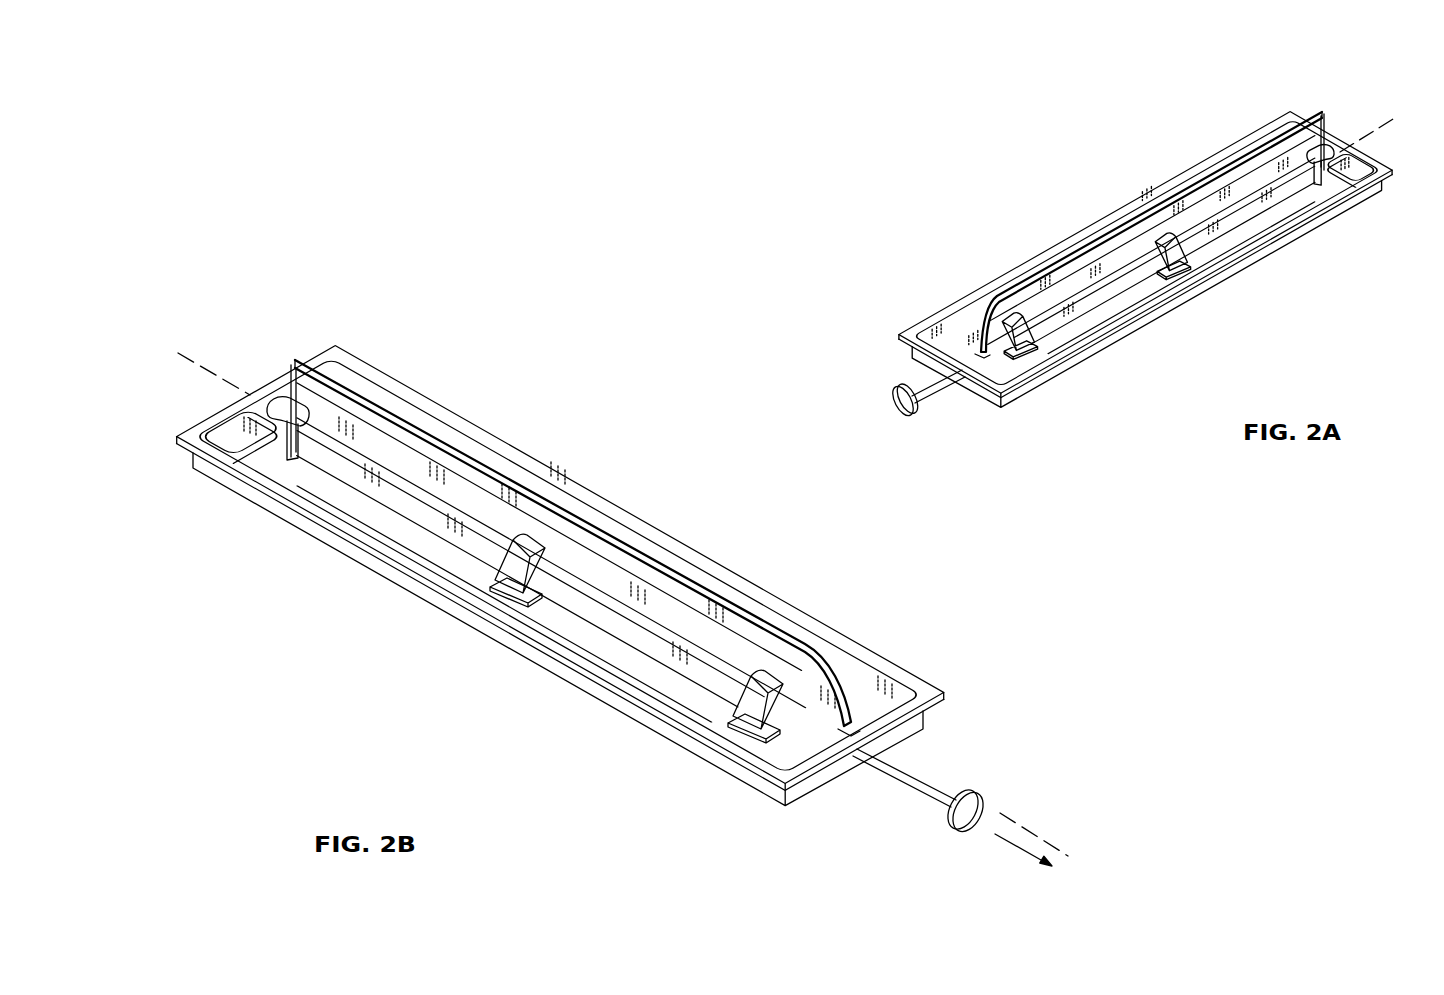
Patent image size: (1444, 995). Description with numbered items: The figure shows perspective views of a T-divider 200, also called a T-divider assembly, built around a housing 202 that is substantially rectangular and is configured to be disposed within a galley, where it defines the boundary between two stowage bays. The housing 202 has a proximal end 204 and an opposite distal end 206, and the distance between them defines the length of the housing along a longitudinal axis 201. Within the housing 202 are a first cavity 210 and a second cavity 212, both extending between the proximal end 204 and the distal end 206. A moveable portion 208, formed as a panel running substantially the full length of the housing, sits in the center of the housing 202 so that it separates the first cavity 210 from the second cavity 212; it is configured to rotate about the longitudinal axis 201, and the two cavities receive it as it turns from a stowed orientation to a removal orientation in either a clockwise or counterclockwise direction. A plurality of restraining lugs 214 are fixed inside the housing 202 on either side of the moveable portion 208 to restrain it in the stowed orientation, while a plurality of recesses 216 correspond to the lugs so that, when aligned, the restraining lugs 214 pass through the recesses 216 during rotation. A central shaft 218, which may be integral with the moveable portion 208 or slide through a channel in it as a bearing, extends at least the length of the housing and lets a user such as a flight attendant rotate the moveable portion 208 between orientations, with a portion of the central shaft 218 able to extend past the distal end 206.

In FIG. 2B, the T-divider 200 is at (516, 331).
In FIG. 2A, the T-divider 200 is at (1170, 102).
In FIG. 2B, the longitudinal axis 201 is at (1038, 838).
In FIG. 2A, the longitudinal axis 201 is at (884, 415).
In FIG. 2B, the housing 202 is at (703, 560).
In FIG. 2A, the housing 202 is at (1168, 318).
In FIG. 2B, the proximal end 204 is at (985, 697).
In FIG. 2A, the proximal end 204 is at (976, 431).
In FIG. 2B, the distal end 206 is at (294, 325).
In FIG. 2A, the distal end 206 is at (1398, 197).
In FIG. 2B, the moveable portion 208 is at (598, 572).
In FIG. 2A, the moveable portion 208 is at (1318, 112).
In FIG. 2B, the first cavity 210 is at (232, 443).
In FIG. 2B, the second cavity 212 is at (352, 384).
In FIG. 2B, the restraining lugs 214 is at (278, 447).
In FIG. 2A, the recesses 216 is at (1202, 235).
In FIG. 2B, the central shaft 218 is at (918, 780).
In FIG. 2A, the central shaft 218 is at (937, 392).